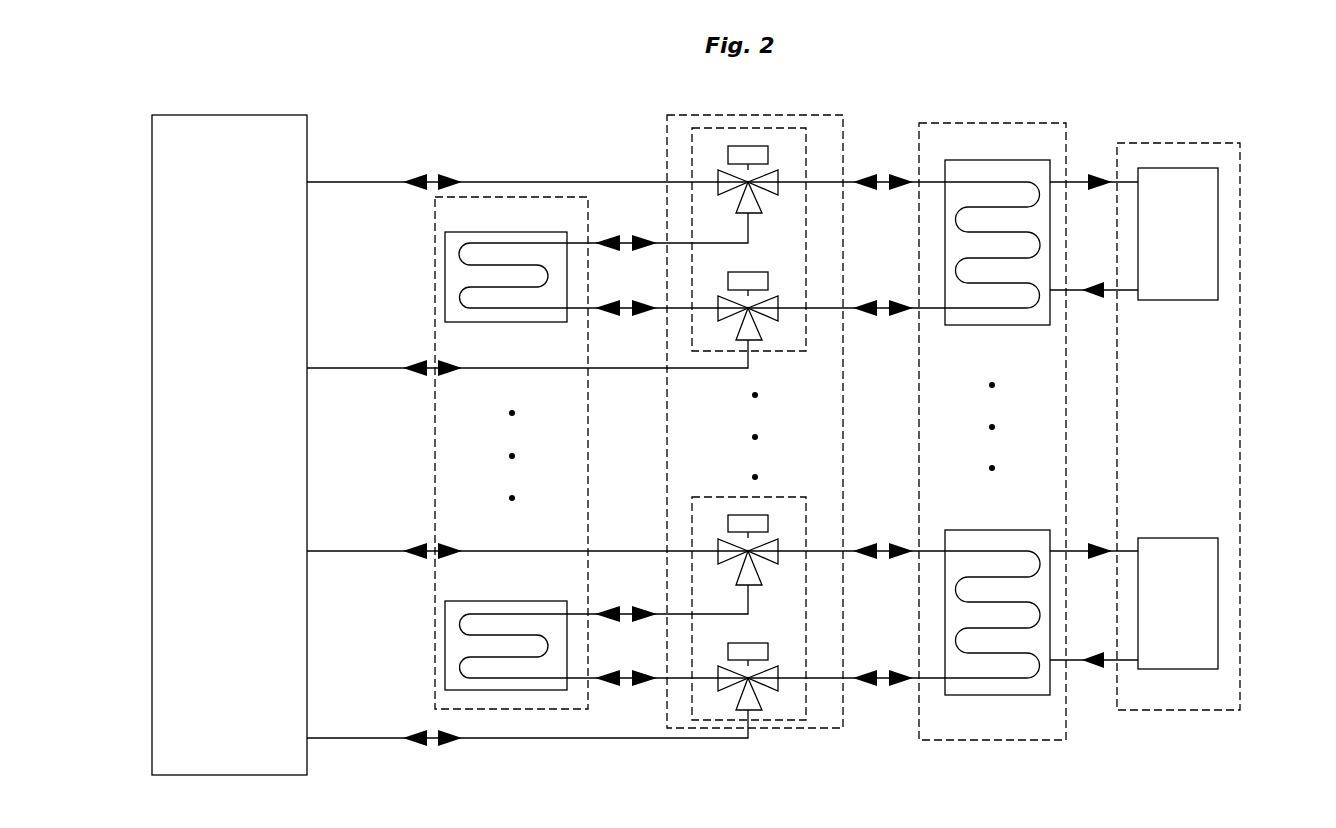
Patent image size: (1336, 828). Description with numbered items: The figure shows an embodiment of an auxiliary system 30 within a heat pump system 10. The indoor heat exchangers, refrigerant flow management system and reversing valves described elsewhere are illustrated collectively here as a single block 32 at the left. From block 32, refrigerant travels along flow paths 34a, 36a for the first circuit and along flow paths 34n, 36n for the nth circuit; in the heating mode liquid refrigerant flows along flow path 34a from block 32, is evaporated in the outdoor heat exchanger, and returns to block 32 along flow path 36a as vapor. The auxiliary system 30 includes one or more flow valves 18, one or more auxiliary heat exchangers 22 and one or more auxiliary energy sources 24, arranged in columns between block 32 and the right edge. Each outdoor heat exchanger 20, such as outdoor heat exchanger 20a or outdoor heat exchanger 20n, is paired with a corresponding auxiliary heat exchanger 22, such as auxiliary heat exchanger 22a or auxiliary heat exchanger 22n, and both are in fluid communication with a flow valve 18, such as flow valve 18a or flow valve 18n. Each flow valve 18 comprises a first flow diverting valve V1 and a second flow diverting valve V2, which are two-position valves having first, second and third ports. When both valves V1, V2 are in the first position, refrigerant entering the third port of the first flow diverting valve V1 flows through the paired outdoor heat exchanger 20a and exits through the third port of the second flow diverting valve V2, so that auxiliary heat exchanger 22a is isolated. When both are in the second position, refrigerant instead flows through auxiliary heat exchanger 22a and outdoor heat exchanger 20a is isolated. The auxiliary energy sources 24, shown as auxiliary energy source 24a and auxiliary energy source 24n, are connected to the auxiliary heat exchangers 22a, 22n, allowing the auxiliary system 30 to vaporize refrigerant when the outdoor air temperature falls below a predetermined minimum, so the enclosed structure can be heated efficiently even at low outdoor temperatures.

The heat pump system 10 is at (316, 86).
The block 32 is at (243, 456).
The flow path 34a is at (367, 182).
The flow path 36a is at (348, 368).
The flow path 34n is at (348, 551).
The flow path 36n is at (372, 738).
The outdoor heat exchanger 20 is at (545, 197).
The outdoor heat exchanger 20a is at (445, 255).
The outdoor heat exchanger 20n is at (445, 627).
The flow valve 18 is at (748, 115).
The flow valve 18a is at (806, 148).
The flow valve 18n is at (806, 693).
The first flow diverting valve V1 is at (733, 145).
The second flow diverting valve V2 is at (768, 318).
The auxiliary heat exchanger 22 is at (1035, 123).
The auxiliary heat exchanger 22a is at (945, 323).
The auxiliary heat exchanger 22n is at (945, 535).
The auxiliary energy source 24 is at (1240, 195).
The auxiliary energy source 24a is at (1134, 234).
The auxiliary energy source 24n is at (1134, 603).
The auxiliary system 30 is at (1032, 765).